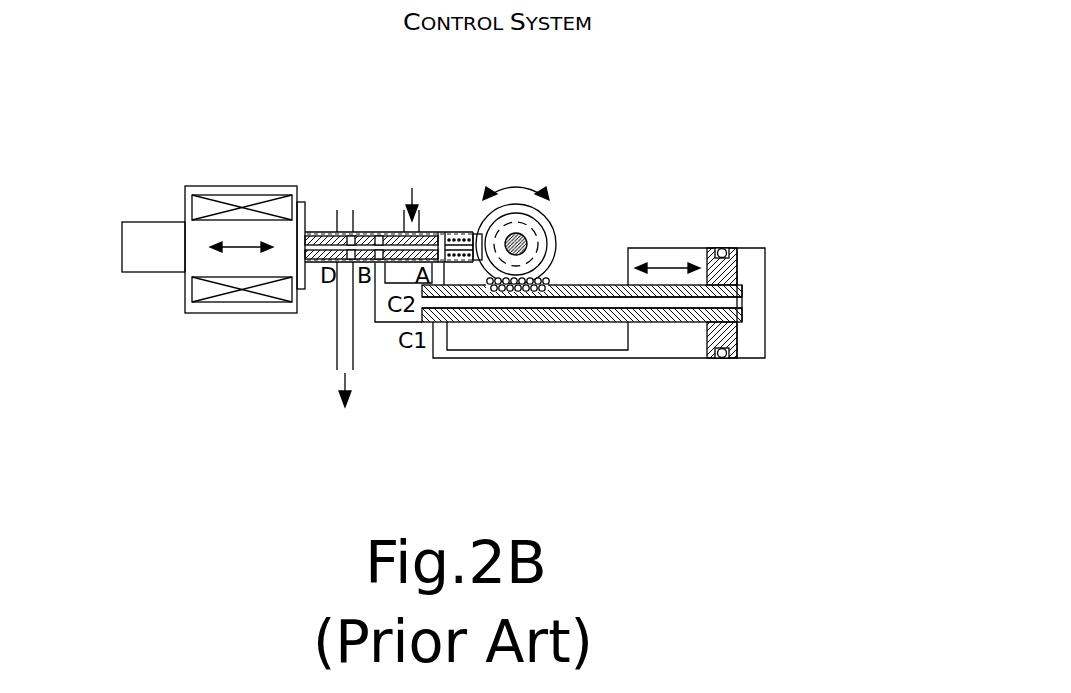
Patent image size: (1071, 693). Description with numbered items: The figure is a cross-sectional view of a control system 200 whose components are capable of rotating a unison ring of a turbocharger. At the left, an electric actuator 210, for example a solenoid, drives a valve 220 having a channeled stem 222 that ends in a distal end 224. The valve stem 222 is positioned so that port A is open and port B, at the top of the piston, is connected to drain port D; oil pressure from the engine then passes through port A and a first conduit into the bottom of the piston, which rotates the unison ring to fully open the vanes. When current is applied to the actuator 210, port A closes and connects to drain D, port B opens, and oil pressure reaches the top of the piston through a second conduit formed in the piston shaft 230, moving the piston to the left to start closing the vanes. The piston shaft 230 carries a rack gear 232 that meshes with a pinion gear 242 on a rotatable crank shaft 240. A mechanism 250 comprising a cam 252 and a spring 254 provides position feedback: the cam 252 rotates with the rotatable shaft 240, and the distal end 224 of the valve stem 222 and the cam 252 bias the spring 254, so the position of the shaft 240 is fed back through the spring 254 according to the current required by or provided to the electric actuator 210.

The control system 200 is at (702, 87).
The electric actuator 210 is at (260, 186).
The valve 220 is at (327, 232).
The valve stem 222 is at (360, 231).
The distal end 224 is at (445, 229).
The piston shaft 230 is at (610, 283).
The rack gear 232 is at (556, 283).
The rotatable crank shaft 240 is at (523, 240).
The pinion gear 242 is at (547, 278).
The mechanism 250 is at (482, 232).
The cam 252 is at (488, 232).
The spring 254 is at (476, 232).